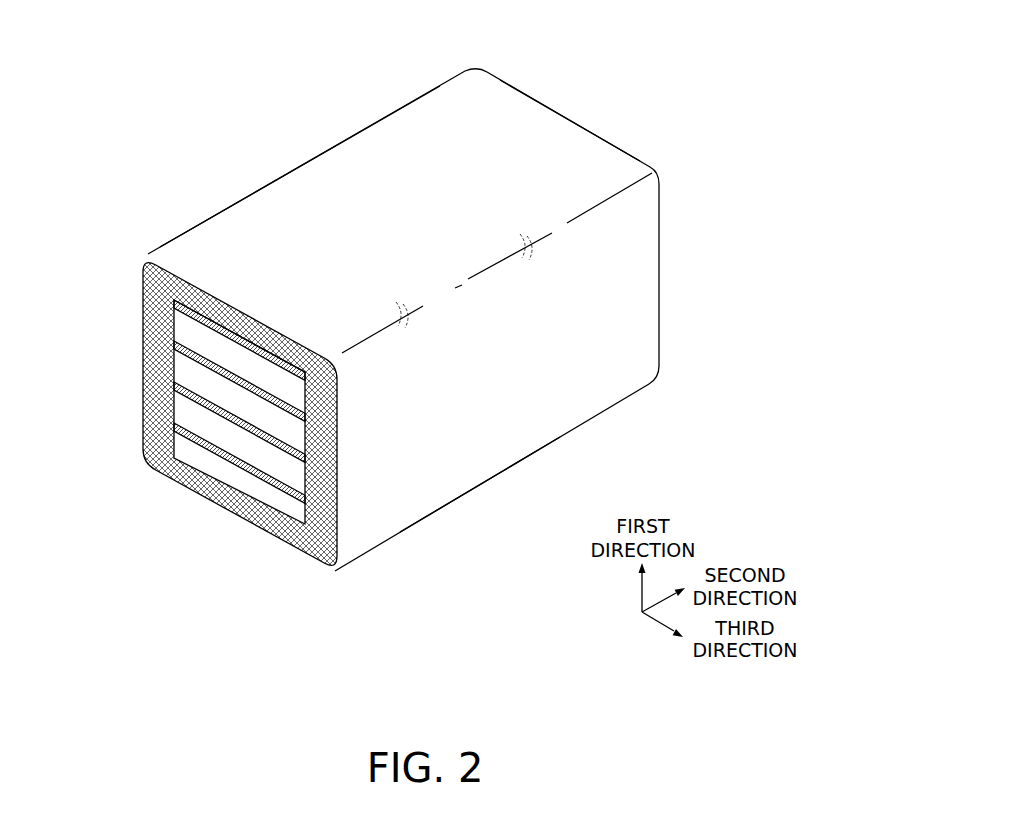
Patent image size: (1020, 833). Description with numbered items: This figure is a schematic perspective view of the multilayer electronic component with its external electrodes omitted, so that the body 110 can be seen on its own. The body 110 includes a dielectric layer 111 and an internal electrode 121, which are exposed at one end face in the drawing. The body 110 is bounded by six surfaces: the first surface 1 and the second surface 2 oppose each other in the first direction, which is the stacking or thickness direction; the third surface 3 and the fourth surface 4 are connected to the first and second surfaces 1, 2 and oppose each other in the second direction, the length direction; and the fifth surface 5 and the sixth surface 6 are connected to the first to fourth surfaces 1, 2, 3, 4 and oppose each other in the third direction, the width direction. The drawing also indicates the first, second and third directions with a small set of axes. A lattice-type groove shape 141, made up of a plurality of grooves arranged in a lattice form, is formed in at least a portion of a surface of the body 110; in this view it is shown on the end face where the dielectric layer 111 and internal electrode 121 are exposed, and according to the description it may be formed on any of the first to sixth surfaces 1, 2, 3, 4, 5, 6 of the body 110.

The first surface 1 is at (487, 488).
The second surface 2 is at (412, 124).
The third surface 3 is at (184, 487).
The fourth surface 4 is at (551, 96).
The fifth surface 5 is at (253, 188).
The sixth surface 6 is at (551, 424).
The body 110 is at (348, 143).
The dielectric layer 111 is at (183, 409).
The internal electrode 121 is at (173, 306).
The lattice-type groove shape 141 is at (153, 446).